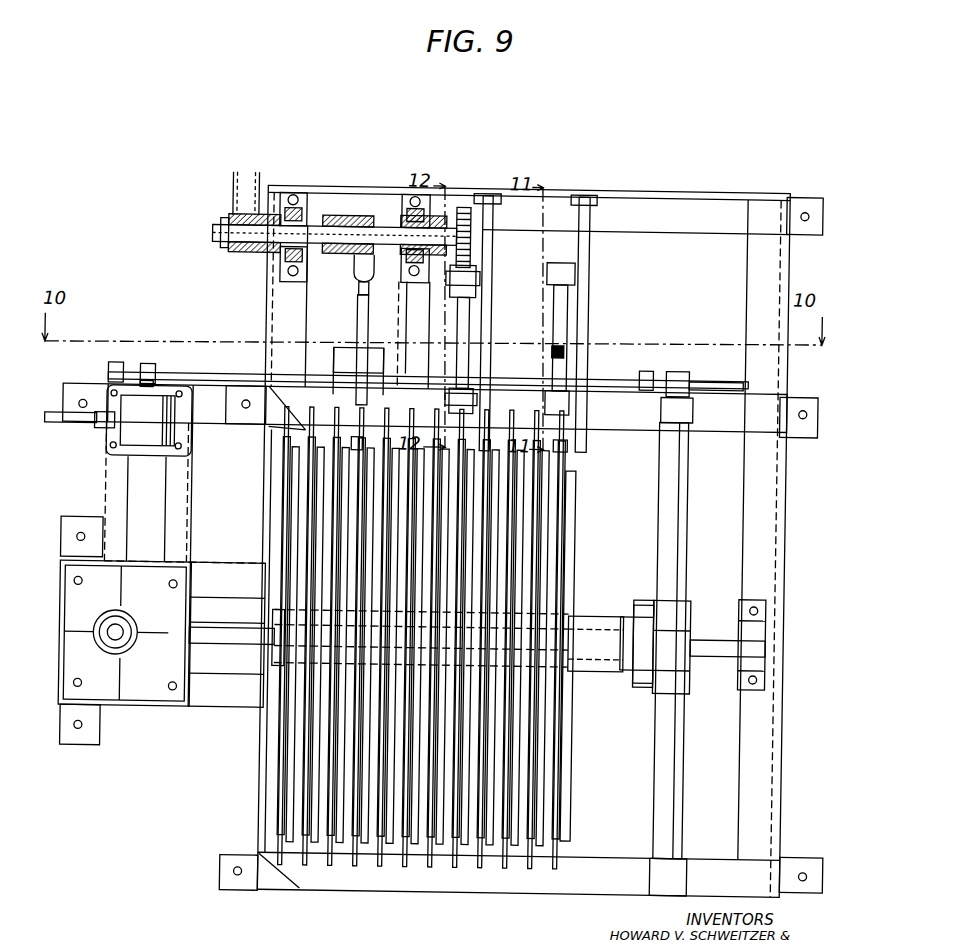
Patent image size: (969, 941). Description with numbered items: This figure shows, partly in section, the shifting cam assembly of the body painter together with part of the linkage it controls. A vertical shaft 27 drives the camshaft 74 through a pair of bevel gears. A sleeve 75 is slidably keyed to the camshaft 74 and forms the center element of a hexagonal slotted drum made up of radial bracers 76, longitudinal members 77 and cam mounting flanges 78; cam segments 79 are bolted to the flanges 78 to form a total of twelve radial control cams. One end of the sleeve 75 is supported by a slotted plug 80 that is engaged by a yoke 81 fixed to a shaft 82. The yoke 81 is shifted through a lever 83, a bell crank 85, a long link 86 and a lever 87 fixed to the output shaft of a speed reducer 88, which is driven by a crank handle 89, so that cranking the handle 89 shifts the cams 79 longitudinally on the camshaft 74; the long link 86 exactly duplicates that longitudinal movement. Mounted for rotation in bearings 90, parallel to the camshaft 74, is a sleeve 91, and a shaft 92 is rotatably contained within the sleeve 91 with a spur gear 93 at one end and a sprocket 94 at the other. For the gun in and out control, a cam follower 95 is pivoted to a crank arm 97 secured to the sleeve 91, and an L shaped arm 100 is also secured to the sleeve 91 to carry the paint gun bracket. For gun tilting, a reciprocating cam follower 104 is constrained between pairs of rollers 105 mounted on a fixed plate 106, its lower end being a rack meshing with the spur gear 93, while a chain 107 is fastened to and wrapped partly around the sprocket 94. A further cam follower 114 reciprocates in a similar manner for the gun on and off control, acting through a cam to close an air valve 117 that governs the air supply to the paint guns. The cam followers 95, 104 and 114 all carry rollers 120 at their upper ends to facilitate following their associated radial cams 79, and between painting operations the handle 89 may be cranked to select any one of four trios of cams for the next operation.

The vertical shaft 27 is at (125, 648).
The camshaft 74 is at (213, 633).
The sleeve 75 is at (594, 615).
The radial bracers 76 is at (577, 576).
The longitudinal members 77 is at (574, 510).
The cam mounting flanges 78 is at (310, 486).
The cam segments 79 is at (312, 424).
The slotted plug 80 is at (637, 672).
The yoke 81 is at (652, 595).
The shaft 82 is at (666, 556).
The lever 83 is at (721, 382).
The bell crank 85 is at (648, 373).
The long link 86 is at (213, 378).
The lever 87 is at (126, 372).
The speed reducer 88 is at (123, 440).
The crank handle 89 is at (69, 432).
The bearings 90 is at (302, 218).
The sleeve 91 is at (367, 226).
The shaft 92 is at (392, 237).
The spur gear 93 is at (470, 243).
The sprocket 94 is at (220, 249).
The cam follower 95 is at (355, 325).
The crank arm 97 is at (342, 258).
The L shaped arm 100 is at (236, 192).
The reciprocating cam follower 104 is at (467, 324).
The rollers 105 is at (477, 270).
The fixed plate 106 is at (490, 336).
The chain 107 is at (228, 220).
The cam follower 114 is at (566, 326).
The air valve 117 is at (551, 352).
The rollers 120 is at (364, 441).